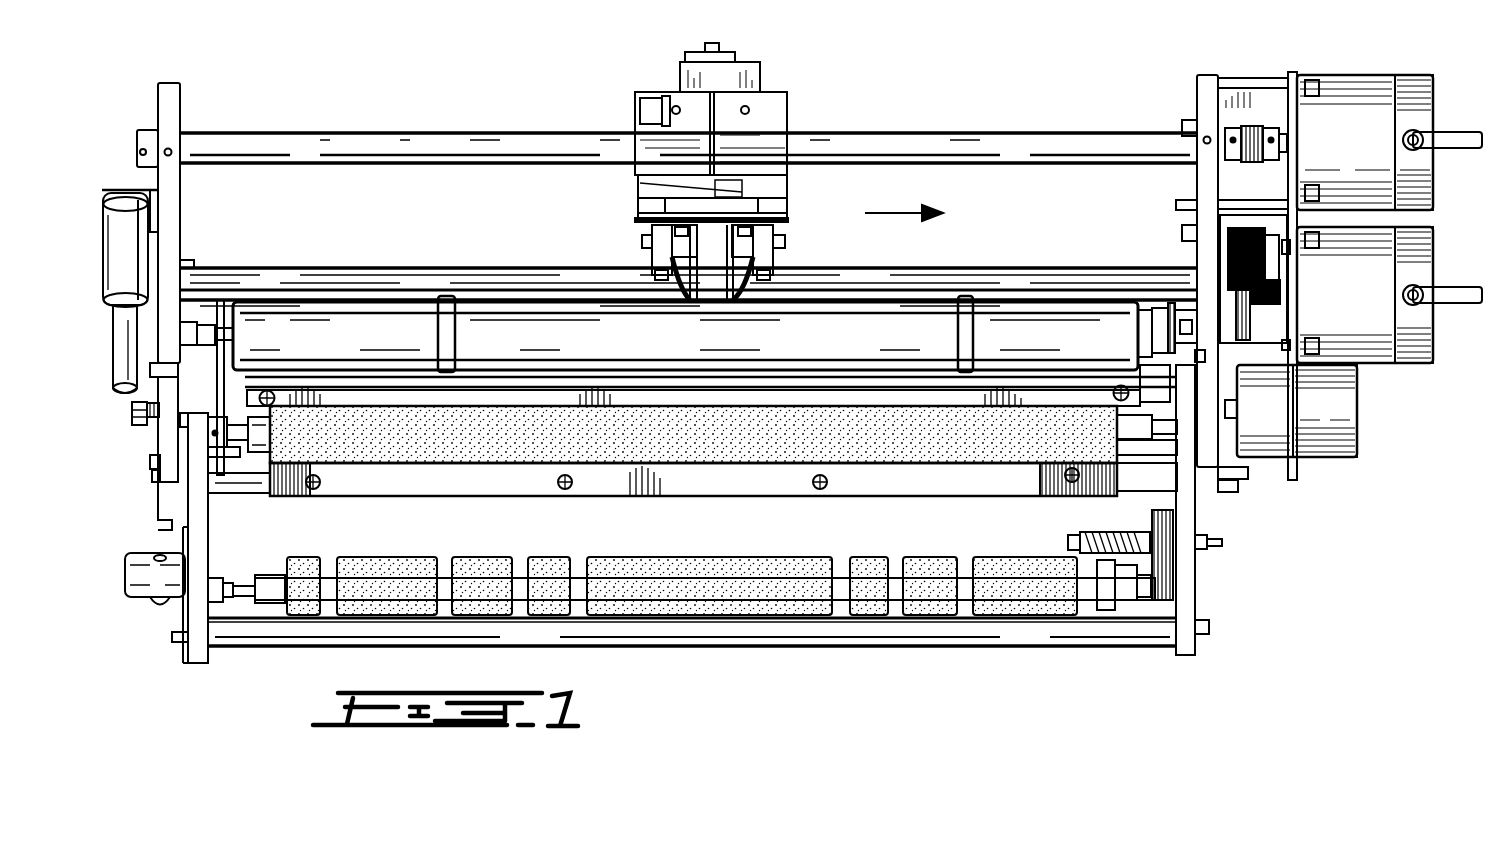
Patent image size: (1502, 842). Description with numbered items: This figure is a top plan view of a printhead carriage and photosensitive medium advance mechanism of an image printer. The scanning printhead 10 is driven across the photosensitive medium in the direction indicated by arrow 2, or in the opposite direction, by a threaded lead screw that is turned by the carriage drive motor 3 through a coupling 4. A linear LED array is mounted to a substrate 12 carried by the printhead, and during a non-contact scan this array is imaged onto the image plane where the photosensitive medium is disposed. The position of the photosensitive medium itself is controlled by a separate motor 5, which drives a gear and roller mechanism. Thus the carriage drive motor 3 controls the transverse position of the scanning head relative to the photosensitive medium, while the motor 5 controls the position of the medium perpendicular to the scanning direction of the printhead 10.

The arrow 2 is at (893, 193).
The carriage drive motor 3 is at (1428, 115).
The coupling 4 is at (1237, 127).
The motor 5 is at (1437, 350).
The scanning printhead 10 is at (615, 195).
The substrate 12 is at (787, 222).